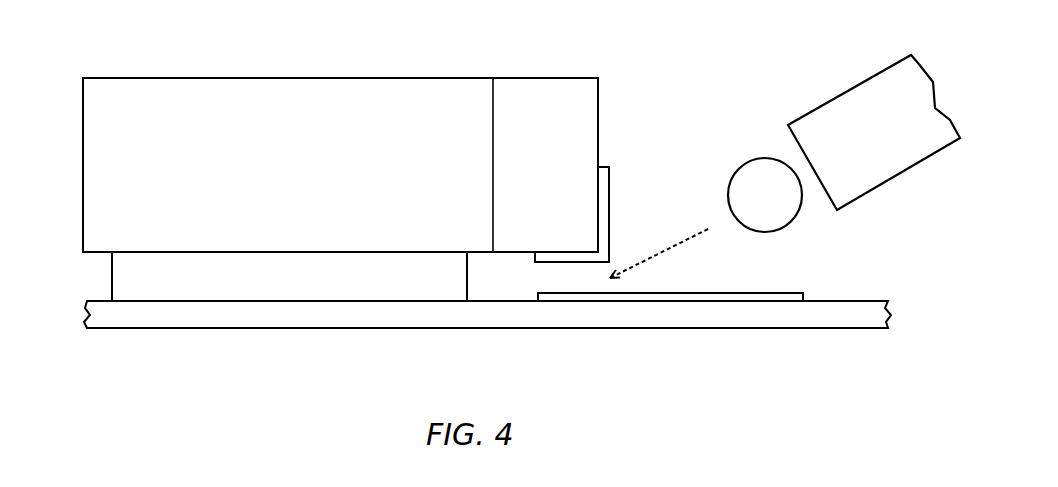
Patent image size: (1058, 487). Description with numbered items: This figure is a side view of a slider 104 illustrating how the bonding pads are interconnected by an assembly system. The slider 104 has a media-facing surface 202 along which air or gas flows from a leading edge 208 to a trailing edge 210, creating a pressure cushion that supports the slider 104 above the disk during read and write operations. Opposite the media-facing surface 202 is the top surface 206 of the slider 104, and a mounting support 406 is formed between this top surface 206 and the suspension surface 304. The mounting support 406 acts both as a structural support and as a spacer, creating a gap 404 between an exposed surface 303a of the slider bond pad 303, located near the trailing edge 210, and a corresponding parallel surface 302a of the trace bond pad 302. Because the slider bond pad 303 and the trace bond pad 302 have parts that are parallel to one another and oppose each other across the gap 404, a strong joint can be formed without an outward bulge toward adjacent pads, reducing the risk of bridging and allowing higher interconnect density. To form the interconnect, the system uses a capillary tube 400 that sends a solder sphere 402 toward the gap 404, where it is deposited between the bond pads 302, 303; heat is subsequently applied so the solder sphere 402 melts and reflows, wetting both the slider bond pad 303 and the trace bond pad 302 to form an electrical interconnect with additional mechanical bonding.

The slider 104 is at (313, 90).
The media-facing surface 202 is at (222, 79).
The leading edge 208 is at (82, 100).
The trailing edge 210 is at (598, 103).
The slider bond pad 303 is at (609, 188).
The exposed surface of slider bond pad 303a is at (547, 262).
The mounting support 406 is at (273, 289).
The top surface 206 is at (473, 252).
The suspension surface 304 is at (298, 316).
The trace bond pad 302 is at (803, 298).
The surface of trace bond pad 302a is at (778, 293).
The gap 404 is at (577, 280).
The solder sphere 402 is at (755, 160).
The capillary tube 400 is at (850, 90).